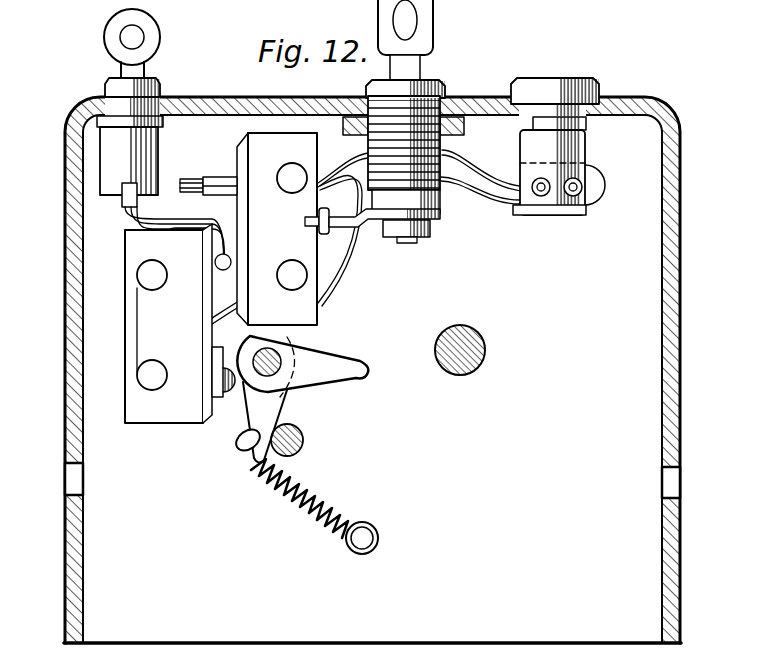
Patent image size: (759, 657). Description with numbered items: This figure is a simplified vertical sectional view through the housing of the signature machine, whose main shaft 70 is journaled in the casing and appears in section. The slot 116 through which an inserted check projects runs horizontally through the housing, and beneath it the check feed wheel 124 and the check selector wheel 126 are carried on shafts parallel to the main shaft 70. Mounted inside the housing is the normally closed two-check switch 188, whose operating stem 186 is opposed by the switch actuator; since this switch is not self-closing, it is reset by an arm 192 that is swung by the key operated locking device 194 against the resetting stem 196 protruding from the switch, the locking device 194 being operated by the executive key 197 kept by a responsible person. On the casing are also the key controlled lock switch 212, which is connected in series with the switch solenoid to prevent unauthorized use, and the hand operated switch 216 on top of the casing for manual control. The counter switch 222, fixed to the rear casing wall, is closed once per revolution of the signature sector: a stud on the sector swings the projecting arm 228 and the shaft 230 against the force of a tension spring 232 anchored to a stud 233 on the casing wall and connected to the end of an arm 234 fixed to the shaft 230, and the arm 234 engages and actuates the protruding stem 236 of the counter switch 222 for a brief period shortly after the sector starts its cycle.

The main shaft 70 is at (485, 360).
The slot 116 is at (70, 490).
The check feed wheel 124 is at (93, 17).
The check selector wheel 126 is at (262, 9).
The operating stem 186 is at (183, 180).
The two-check switch 188 is at (277, 233).
The arm 192 is at (368, 222).
The key operated locking device 194 is at (427, 121).
The resetting stem 196 is at (312, 230).
The executive key 197 is at (420, 28).
The key controlled lock switch 212 is at (161, 89).
The hand operated switch 216 is at (576, 76).
The counter switch 222 is at (150, 324).
The projecting arm 228 is at (350, 366).
The shaft 230 is at (290, 355).
The tension spring 232 is at (328, 500).
The stud 233 is at (364, 536).
The arm 234 is at (272, 411).
The protruding stem 236 is at (222, 398).